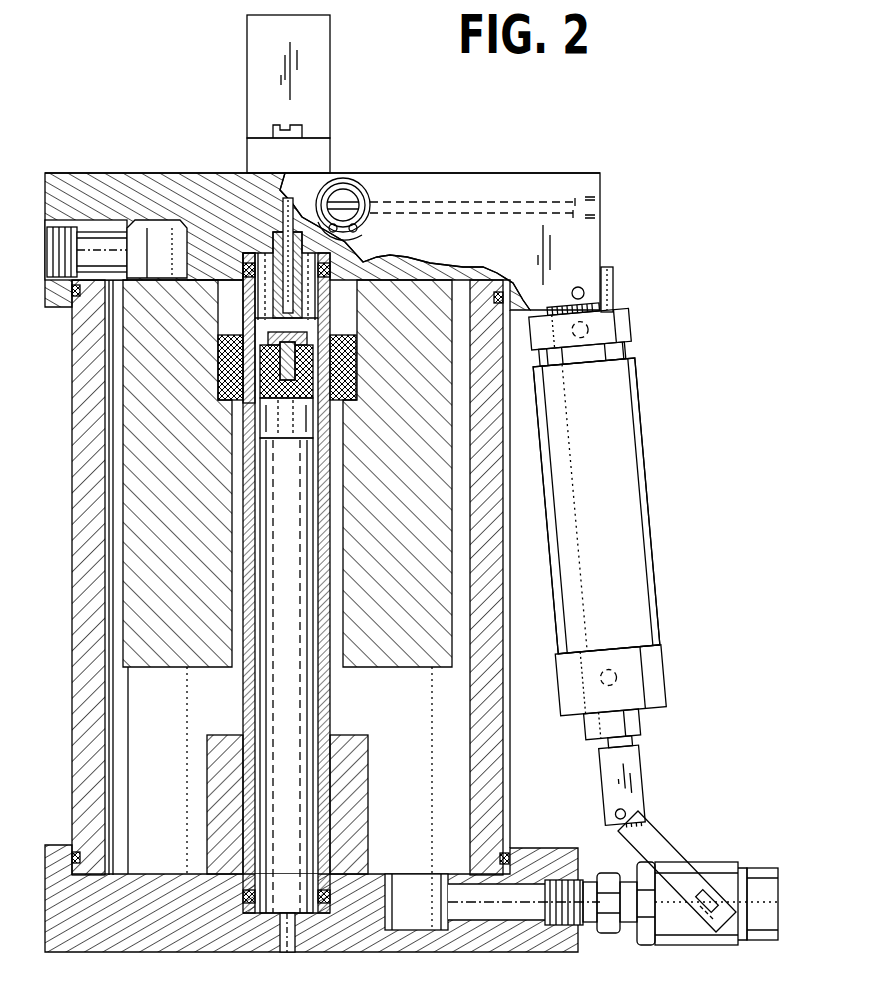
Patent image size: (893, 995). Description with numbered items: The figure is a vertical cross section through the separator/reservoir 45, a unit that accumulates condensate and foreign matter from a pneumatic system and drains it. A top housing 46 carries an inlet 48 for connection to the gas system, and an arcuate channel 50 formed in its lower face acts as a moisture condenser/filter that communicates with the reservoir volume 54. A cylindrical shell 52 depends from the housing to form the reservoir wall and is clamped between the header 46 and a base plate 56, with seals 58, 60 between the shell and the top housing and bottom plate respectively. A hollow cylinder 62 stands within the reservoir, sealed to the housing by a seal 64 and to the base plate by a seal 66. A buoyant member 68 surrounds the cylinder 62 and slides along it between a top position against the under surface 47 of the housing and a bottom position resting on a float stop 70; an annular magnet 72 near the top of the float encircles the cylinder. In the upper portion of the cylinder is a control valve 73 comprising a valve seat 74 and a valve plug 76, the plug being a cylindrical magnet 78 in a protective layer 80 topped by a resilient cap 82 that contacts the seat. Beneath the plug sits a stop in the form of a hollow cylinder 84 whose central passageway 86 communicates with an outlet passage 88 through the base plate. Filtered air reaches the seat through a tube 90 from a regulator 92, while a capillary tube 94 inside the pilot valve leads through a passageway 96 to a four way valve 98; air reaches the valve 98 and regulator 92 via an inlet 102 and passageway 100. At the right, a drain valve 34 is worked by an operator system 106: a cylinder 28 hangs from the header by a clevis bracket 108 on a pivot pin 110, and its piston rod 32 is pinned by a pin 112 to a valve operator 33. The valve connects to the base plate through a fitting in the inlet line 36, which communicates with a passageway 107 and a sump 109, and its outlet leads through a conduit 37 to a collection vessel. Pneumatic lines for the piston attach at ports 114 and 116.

The cylinder 28 is at (640, 412).
The piston rod 32 is at (640, 769).
The valve operator 33 is at (670, 843).
The drain valve 34 is at (712, 862).
The inlet line 36 is at (626, 872).
The conduit 37 is at (760, 868).
The separator/reservoir 45 is at (44, 130).
The top housing 46 is at (97, 173).
The under surface 47 is at (200, 258).
The inlet 48 is at (65, 228).
The arcuate channel 50 is at (135, 222).
The cylindrical shell 52 is at (104, 375).
The reservoir volume 54 is at (116, 454).
The base plate 56 is at (140, 873).
The seal 58 is at (80, 290).
The seal 60 is at (509, 848).
The hollow cylinder 62 is at (243, 697).
The seal 64 is at (388, 263).
The seal 66 is at (334, 905).
The buoyant member 68 is at (168, 668).
The float stop 70 is at (370, 765).
The annular magnet 72 is at (218, 370).
The control valve 73 is at (312, 323).
The valve seat 74 is at (322, 312).
The valve plug 76 is at (303, 403).
The cylindrical magnet 78 is at (283, 398).
The protective layer 80 is at (300, 415).
The resilient cap 82 is at (244, 320).
The hollow cylinder stop 84 is at (313, 512).
The central passageway 86 is at (300, 573).
The outlet passage 88 is at (297, 932).
The tube 90 is at (343, 233).
The regulator 92 is at (366, 190).
The capillary tube 94 is at (265, 197).
The passageway 96 is at (280, 193).
The four way valve 98 is at (331, 68).
The passageway 100 is at (460, 203).
The inlet 102 is at (600, 203).
The operator system 106 is at (665, 480).
The passageway 107 is at (549, 878).
The clevis bracket 108 is at (614, 283).
The sump 109 is at (413, 875).
The pivot pin 110 is at (583, 289).
The pin 112 is at (625, 812).
The port 114 is at (588, 331).
The port 116 is at (622, 677).